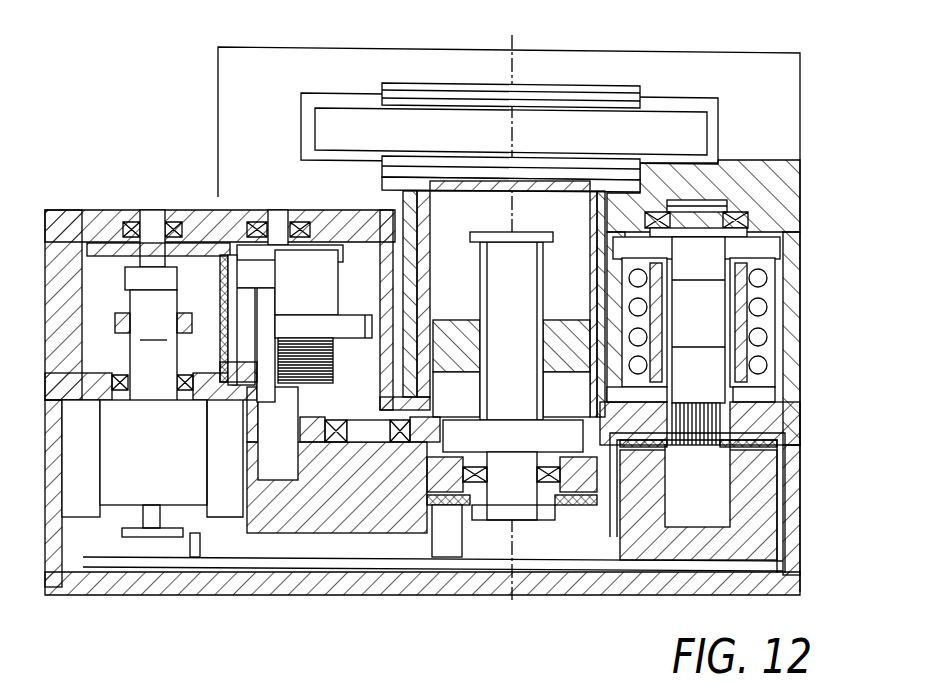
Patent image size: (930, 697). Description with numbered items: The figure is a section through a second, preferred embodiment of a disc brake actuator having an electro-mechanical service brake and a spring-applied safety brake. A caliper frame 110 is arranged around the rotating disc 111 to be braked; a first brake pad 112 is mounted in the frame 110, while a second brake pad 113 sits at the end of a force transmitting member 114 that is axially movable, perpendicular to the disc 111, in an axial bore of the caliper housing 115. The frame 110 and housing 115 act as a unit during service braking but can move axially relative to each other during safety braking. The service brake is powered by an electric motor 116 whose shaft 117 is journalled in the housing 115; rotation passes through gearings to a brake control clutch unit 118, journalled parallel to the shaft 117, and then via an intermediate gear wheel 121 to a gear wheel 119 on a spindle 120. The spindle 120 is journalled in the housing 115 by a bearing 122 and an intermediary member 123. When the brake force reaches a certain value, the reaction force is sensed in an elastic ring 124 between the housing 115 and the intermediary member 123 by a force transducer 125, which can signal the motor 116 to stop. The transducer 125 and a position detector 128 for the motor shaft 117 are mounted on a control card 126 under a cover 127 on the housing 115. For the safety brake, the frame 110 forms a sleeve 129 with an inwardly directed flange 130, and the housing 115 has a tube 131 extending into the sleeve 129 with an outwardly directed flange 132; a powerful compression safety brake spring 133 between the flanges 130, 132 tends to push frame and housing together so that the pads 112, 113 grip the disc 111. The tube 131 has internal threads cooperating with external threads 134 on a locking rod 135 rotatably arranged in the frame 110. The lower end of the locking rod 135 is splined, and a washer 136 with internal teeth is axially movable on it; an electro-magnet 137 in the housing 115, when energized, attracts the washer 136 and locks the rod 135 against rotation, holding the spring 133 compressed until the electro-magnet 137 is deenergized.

The caliper frame 110 is at (228, 78).
The rotating disc 111 is at (325, 127).
The first brake pad 112 is at (401, 105).
The second brake pad 113 is at (549, 163).
The force transmitting member 114 is at (586, 192).
The caliper housing 115 is at (355, 522).
The electric motor 116 is at (79, 505).
The motor shaft 117 is at (130, 357).
The brake control clutch unit 118 is at (210, 290).
The gear wheel 119 is at (533, 445).
The spindle 120 is at (500, 248).
The intermediate gear wheel 121 is at (314, 447).
The bearing 122 is at (585, 507).
The intermediary member 123 is at (440, 478).
The elastic ring 124 is at (572, 490).
The force transducer 125 is at (450, 555).
The control card 126 is at (123, 493).
The cover 127 is at (250, 567).
The position detector 128 is at (197, 543).
The sleeve 129 is at (783, 269).
The inwardly directed flange 130 is at (758, 394).
The tube 131 is at (766, 328).
The outwardly directed flange 132 is at (794, 228).
The safety brake spring 133 is at (758, 345).
The external threads 134 is at (736, 298).
The locking rod 135 is at (716, 396).
The washer 136 is at (753, 450).
The electro-magnet 137 is at (766, 497).